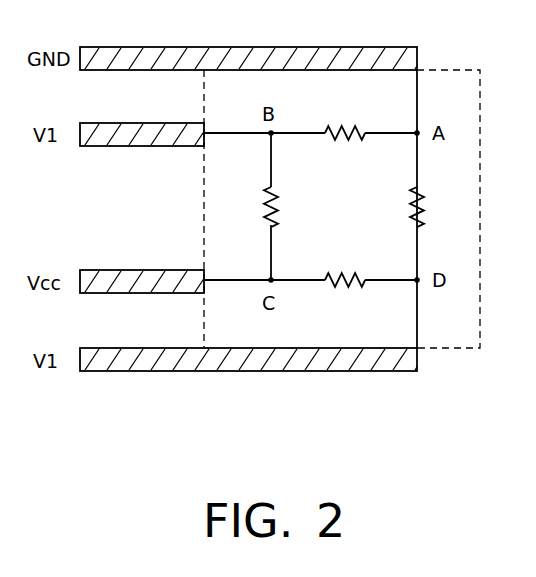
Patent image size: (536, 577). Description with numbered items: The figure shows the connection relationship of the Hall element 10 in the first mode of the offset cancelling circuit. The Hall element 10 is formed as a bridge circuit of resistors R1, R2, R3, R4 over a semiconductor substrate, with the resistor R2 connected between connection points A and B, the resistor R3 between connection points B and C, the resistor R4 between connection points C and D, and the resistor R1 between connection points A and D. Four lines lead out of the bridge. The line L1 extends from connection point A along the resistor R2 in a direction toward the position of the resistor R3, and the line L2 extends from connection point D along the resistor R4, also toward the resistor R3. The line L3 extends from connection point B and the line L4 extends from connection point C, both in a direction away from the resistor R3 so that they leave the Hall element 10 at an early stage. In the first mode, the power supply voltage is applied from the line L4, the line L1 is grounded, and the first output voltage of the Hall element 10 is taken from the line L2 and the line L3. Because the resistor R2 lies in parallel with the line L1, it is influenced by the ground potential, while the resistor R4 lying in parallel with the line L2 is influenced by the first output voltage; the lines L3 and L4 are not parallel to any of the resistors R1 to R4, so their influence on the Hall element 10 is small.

The line L1 is at (134, 53).
The line L2 is at (134, 355).
The line L3 is at (134, 130).
The line L4 is at (134, 277).
The resistor R1 is at (437, 207).
The resistor R2 is at (345, 116).
The resistor R3 is at (252, 207).
The resistor R4 is at (345, 298).
The Hall element 10 is at (290, 452).